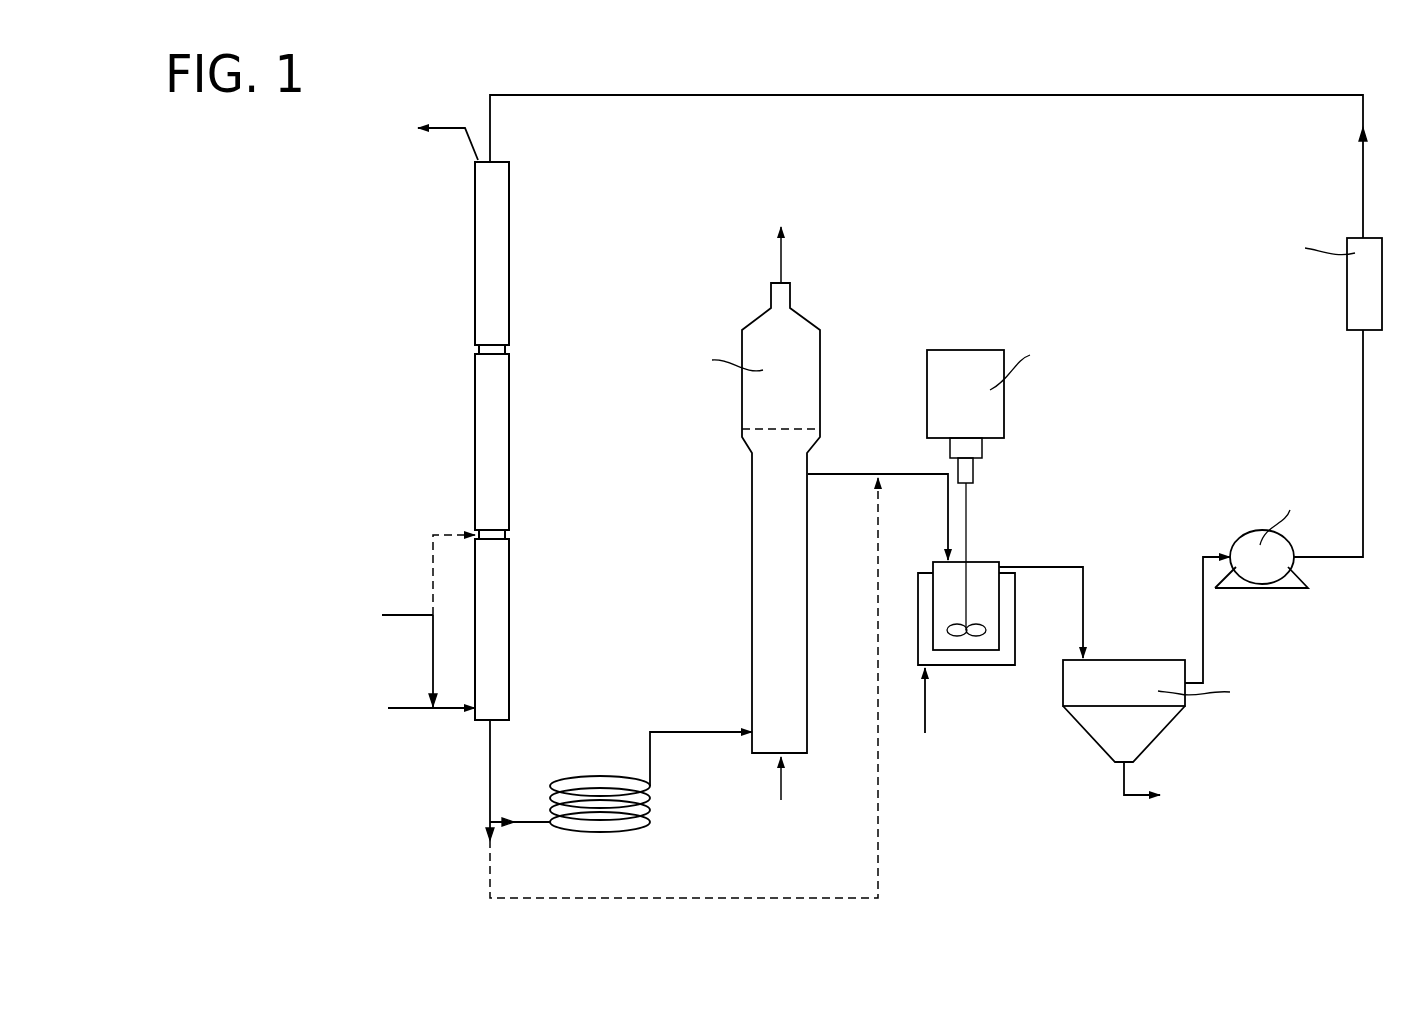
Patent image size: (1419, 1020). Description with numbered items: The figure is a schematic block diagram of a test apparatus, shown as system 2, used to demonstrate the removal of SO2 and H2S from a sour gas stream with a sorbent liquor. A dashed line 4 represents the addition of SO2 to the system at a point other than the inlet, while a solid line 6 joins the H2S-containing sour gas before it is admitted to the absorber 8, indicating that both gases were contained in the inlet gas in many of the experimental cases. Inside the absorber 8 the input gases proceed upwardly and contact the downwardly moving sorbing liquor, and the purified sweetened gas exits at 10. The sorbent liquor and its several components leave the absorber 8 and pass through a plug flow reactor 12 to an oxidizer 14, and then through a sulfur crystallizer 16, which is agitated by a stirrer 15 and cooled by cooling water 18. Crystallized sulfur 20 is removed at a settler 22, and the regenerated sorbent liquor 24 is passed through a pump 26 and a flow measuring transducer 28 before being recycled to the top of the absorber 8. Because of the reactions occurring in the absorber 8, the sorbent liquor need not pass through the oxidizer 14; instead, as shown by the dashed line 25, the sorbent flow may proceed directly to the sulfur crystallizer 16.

The system 2 is at (448, 286).
The dashed line 4 is at (430, 580).
The solid line 6 is at (433, 673).
The absorber 8 is at (475, 433).
The sweetened gas exit 10 is at (467, 138).
The plug flow reactor 12 is at (650, 812).
The oxidizer 14 is at (752, 530).
The stirrer 15 is at (927, 400).
The sulfur crystallizer 16 is at (990, 560).
The cooling water 18 is at (925, 710).
The crystallized sulfur 20 is at (1177, 810).
The settler 22 is at (1095, 745).
The regenerated sorbent liquor 24 is at (628, 140).
The dashed line 25 is at (842, 893).
The pump 26 is at (1230, 543).
The flow measuring transducer 28 is at (1347, 318).